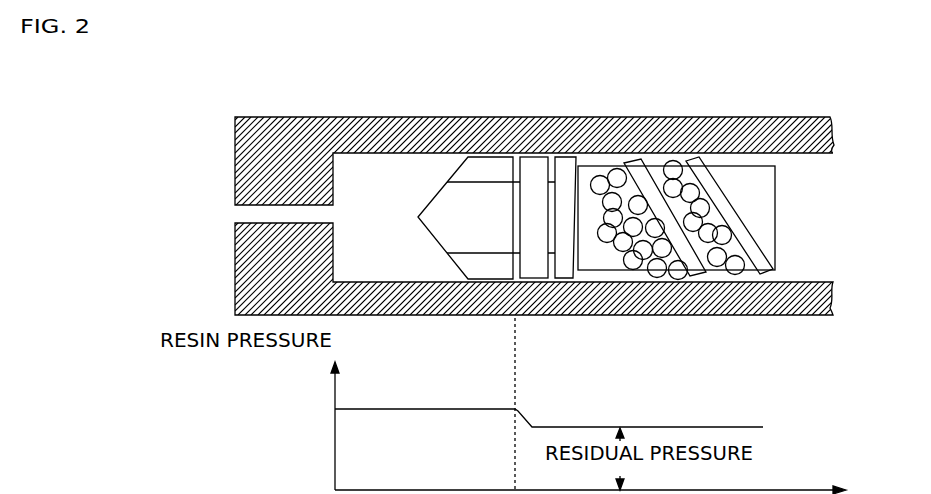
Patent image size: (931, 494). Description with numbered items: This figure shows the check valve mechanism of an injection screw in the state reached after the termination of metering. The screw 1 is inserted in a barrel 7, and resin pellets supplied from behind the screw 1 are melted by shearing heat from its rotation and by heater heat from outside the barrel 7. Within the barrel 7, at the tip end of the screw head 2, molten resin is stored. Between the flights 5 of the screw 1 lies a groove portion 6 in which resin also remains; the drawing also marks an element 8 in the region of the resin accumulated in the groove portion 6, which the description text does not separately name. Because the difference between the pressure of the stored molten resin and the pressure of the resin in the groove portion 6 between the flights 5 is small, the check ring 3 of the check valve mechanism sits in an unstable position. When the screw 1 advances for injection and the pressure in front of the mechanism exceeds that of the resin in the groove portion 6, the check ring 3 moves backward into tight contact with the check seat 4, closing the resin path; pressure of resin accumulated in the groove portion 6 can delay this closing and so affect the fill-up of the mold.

The screw 1 is at (740, 172).
The screw head 2 is at (468, 164).
The check ring 3 is at (538, 152).
The check seat 4 is at (562, 162).
The flights 5 is at (630, 163).
The groove portion 6 is at (660, 172).
The barrel 7 is at (382, 130).
The pellet 8 is at (655, 277).